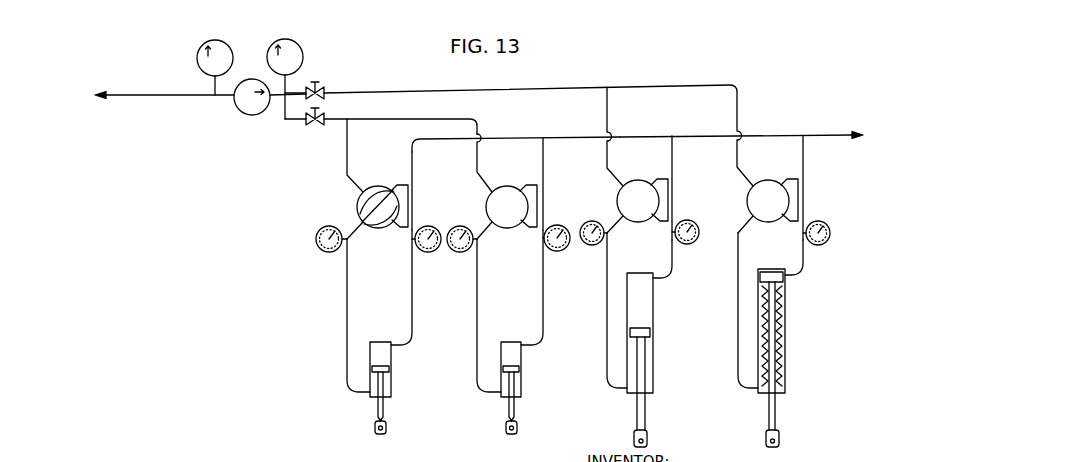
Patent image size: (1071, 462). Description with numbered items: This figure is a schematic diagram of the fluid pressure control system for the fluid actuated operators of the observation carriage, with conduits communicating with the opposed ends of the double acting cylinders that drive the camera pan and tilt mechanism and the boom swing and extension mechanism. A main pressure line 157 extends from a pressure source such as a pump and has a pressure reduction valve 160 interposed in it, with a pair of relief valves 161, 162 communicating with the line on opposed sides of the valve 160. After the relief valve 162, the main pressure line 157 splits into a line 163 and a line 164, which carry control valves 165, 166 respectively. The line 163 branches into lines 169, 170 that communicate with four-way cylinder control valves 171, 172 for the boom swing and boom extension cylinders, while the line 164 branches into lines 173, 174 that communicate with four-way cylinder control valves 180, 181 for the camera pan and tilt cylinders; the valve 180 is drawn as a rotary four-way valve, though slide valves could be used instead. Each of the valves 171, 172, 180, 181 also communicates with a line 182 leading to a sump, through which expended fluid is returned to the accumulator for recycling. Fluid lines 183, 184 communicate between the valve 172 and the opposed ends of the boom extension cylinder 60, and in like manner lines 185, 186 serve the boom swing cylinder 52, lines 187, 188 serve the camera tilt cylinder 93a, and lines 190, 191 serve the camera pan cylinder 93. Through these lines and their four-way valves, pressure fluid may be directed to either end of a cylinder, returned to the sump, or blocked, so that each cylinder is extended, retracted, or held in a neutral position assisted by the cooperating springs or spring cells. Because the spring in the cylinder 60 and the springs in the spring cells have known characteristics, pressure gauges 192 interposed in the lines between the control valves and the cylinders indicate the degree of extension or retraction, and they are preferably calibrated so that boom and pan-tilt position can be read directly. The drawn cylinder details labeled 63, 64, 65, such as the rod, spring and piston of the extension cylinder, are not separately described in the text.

The main pressure line 157 is at (185, 97).
The pressure reduction valve 160 is at (257, 115).
The relief valve 161 is at (228, 45).
The relief valve 162 is at (298, 44).
The line 163 is at (362, 93).
The line 164 is at (333, 119).
The control valve 165 is at (321, 83).
The control valve 166 is at (308, 126).
The line 169 is at (604, 128).
The line 170 is at (641, 84).
The four-way cylinder control valve 171 is at (659, 193).
The four-way cylinder control valve 172 is at (789, 193).
The line 173 is at (347, 168).
The line 174 is at (482, 127).
The four-way cylinder control valve 180 is at (396, 208).
The four-way cylinder control valve 181 is at (527, 200).
The line 182 is at (637, 135).
The fluid line 183 is at (805, 265).
The fluid line 184 is at (738, 304).
The line 185 is at (672, 270).
The line 186 is at (607, 304).
The line 187 is at (541, 275).
The line 188 is at (477, 308).
The line 190 is at (412, 278).
The line 191 is at (347, 278).
The pressure gauge 192 is at (317, 233).
The boom swing cylinder 52 is at (653, 330).
The boom extension cylinder 60 is at (791, 305).
The piston rod 63 is at (777, 410).
The spring 64 is at (780, 318).
The piston 65 is at (776, 327).
The camera pan cylinder 93 is at (391, 377).
The camera tilt cylinder 93a is at (521, 377).